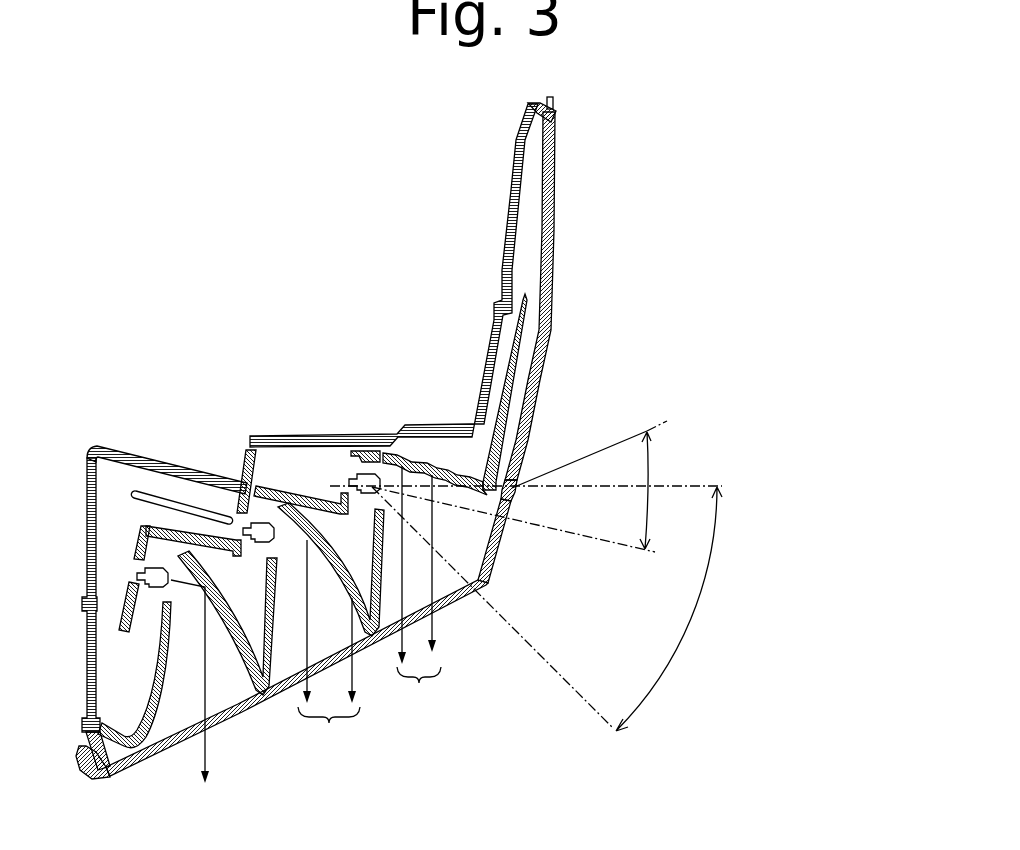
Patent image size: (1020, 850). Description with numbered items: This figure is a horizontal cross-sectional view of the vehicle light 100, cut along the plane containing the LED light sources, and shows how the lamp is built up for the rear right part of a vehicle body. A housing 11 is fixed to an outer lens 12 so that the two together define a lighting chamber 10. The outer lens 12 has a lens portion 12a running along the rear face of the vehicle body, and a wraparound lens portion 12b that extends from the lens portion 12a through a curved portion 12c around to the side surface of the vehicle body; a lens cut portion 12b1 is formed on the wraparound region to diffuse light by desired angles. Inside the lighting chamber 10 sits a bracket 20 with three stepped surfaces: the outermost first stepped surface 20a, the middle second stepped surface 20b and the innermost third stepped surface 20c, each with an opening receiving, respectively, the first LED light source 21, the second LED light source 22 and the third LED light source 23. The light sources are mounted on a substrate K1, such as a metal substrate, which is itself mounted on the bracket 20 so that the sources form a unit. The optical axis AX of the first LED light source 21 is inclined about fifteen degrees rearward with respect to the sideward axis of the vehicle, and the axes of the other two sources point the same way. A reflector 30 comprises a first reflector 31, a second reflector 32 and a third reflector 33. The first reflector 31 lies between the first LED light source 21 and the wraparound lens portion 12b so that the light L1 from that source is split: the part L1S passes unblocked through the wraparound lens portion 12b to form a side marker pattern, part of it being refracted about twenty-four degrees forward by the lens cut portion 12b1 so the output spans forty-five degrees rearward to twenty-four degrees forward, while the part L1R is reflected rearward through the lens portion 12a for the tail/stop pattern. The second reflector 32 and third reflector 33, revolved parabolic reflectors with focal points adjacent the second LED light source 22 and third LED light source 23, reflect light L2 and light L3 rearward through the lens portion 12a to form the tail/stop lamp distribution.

The vehicle light 100 is at (238, 113).
The lighting chamber 10 is at (88, 499).
The housing 11 is at (288, 436).
The outer lens 12 is at (262, 704).
The lens portion 12a is at (378, 642).
The wraparound lens portion 12b is at (538, 404).
The lens cut portion 12b1 is at (521, 500).
The curved portion 12c is at (484, 594).
The bracket 20 is at (243, 489).
The first stepped surface 20a is at (367, 452).
The second stepped surface 20b is at (256, 499).
The third stepped surface 20c is at (124, 600).
The first LED light source 21 is at (363, 493).
The second LED light source 22 is at (251, 543).
The third LED light source 23 is at (153, 593).
The reflector 30 is at (148, 677).
The first reflector 31 is at (448, 483).
The second reflector 32 is at (345, 594).
The third reflector 33 is at (238, 645).
The substrate K1 is at (170, 528).
The light emitted from the first LED light source L1 is at (432, 475).
The reflected light L1R is at (420, 694).
The part of the light L1S is at (489, 498).
The light reflected by the second reflector L2 is at (277, 530).
The light reflected by the third reflector L3 is at (200, 766).
The optical axis AX is at (647, 549).